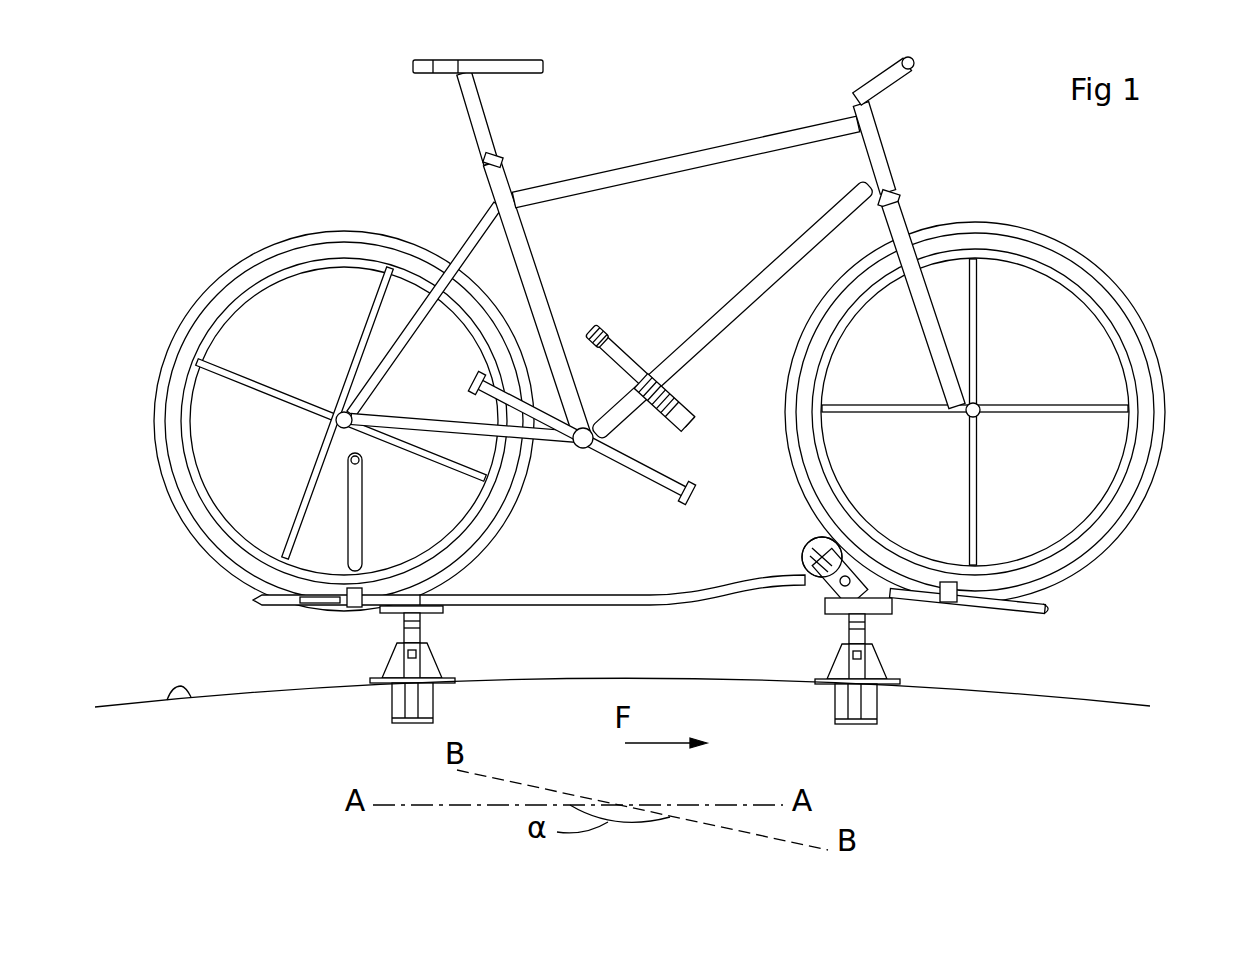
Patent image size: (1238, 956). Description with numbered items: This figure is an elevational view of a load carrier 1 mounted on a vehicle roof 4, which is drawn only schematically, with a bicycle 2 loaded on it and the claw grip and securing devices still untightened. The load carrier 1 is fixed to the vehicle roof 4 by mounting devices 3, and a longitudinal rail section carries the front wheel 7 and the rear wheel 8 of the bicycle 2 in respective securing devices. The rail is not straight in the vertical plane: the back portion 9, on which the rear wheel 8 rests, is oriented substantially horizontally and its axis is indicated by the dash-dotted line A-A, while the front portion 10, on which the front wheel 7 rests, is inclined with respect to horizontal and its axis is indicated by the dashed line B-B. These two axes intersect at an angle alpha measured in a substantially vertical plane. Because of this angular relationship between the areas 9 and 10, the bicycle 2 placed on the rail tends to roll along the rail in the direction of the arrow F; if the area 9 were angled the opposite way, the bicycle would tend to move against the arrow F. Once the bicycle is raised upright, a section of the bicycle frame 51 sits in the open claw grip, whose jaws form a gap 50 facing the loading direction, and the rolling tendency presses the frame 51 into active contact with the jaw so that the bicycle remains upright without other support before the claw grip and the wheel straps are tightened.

The load carrier 1 is at (686, 630).
The bicycle 2 is at (658, 281).
The mounting devices 3 is at (347, 660).
The vehicle roof 4 is at (160, 704).
The front wheel 7 is at (1118, 285).
The rear wheel 8 is at (245, 258).
The rear wheel area of rail section 9 is at (313, 607).
The front portion of rail section 10 is at (1045, 597).
The gap 50 is at (641, 347).
The bicycle frame 51 is at (742, 287).